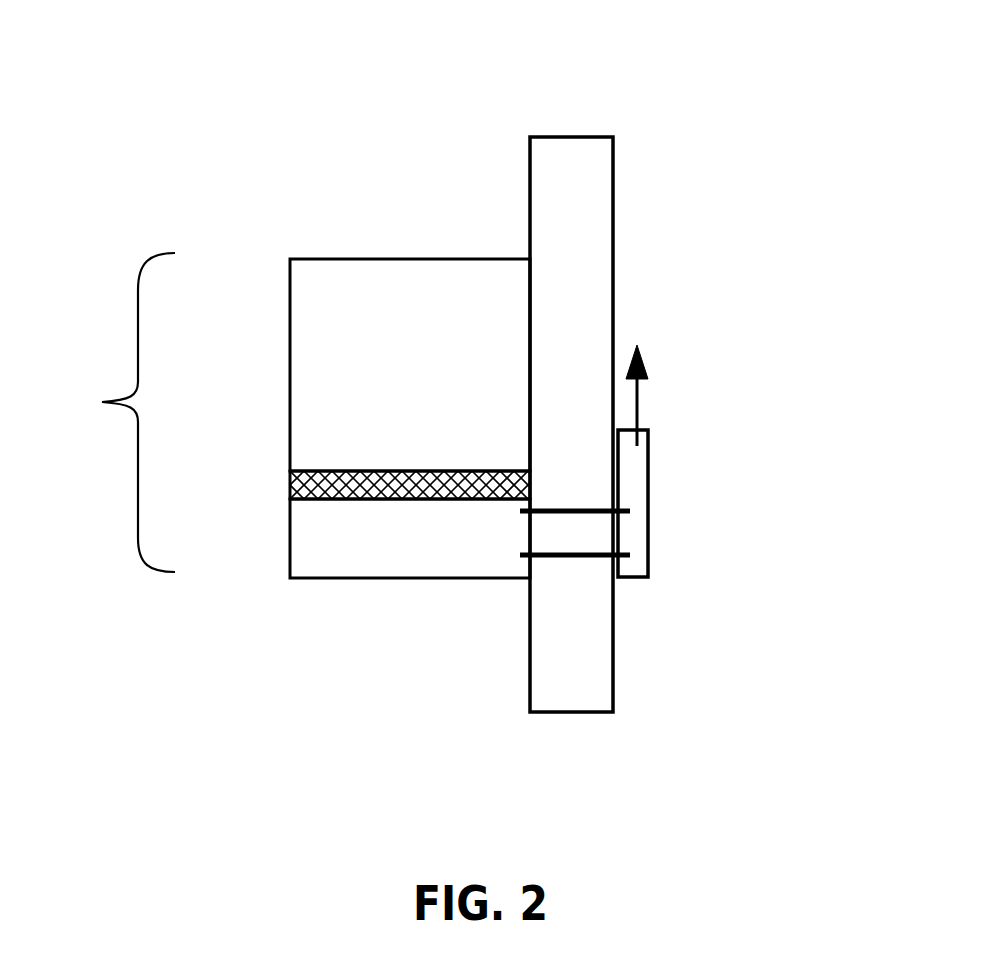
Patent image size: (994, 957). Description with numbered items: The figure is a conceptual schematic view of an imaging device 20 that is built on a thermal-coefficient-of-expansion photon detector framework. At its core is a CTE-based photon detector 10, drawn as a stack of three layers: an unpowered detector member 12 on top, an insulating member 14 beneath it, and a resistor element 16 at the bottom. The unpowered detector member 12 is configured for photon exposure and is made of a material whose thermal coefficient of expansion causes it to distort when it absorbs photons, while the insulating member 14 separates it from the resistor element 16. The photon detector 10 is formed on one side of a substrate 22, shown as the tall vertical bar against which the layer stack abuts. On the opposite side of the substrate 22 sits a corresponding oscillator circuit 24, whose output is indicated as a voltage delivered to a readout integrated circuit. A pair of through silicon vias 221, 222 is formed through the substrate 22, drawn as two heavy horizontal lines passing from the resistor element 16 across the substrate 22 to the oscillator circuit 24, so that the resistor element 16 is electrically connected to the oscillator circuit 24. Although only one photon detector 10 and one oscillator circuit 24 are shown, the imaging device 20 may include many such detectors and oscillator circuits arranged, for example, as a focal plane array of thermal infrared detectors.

The imaging device 20 is at (425, 48).
The CTE-based photon detector 10 is at (121, 412).
The unpowered detector member 12 is at (290, 307).
The insulating member 14 is at (290, 486).
The resistor element 16 is at (290, 538).
The substrate 22 is at (568, 137).
The through silicon via 221 is at (590, 508).
The through silicon via 222 is at (574, 560).
The oscillator circuit 24 is at (649, 512).